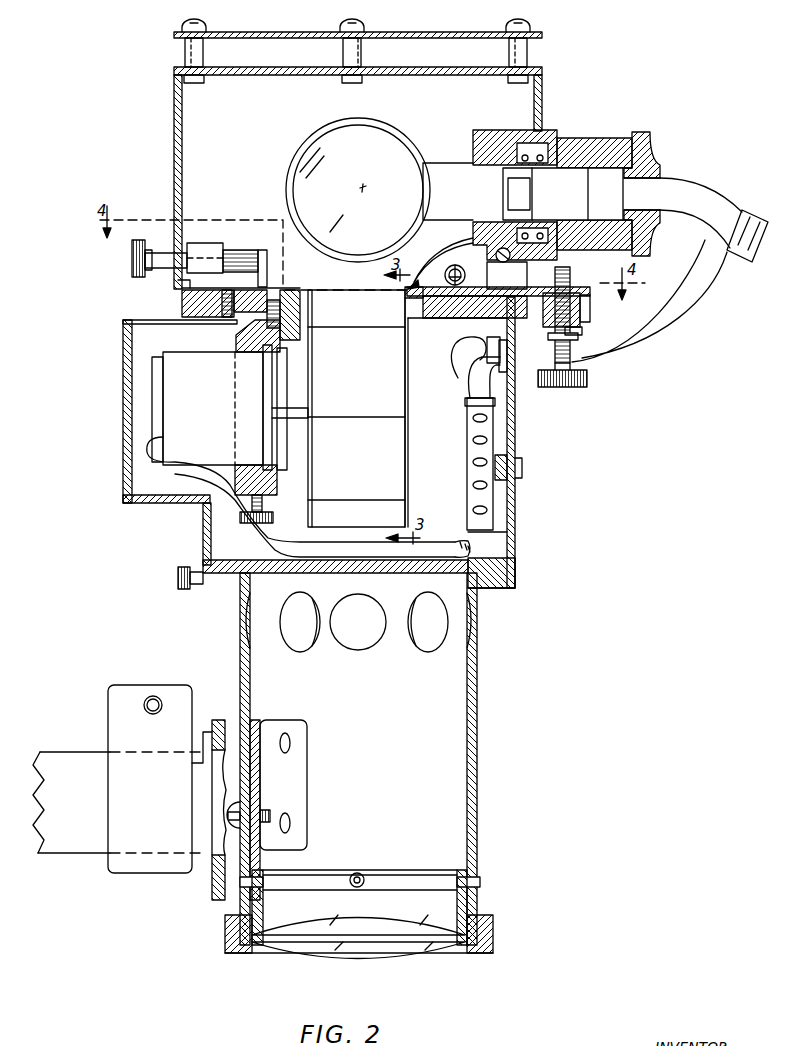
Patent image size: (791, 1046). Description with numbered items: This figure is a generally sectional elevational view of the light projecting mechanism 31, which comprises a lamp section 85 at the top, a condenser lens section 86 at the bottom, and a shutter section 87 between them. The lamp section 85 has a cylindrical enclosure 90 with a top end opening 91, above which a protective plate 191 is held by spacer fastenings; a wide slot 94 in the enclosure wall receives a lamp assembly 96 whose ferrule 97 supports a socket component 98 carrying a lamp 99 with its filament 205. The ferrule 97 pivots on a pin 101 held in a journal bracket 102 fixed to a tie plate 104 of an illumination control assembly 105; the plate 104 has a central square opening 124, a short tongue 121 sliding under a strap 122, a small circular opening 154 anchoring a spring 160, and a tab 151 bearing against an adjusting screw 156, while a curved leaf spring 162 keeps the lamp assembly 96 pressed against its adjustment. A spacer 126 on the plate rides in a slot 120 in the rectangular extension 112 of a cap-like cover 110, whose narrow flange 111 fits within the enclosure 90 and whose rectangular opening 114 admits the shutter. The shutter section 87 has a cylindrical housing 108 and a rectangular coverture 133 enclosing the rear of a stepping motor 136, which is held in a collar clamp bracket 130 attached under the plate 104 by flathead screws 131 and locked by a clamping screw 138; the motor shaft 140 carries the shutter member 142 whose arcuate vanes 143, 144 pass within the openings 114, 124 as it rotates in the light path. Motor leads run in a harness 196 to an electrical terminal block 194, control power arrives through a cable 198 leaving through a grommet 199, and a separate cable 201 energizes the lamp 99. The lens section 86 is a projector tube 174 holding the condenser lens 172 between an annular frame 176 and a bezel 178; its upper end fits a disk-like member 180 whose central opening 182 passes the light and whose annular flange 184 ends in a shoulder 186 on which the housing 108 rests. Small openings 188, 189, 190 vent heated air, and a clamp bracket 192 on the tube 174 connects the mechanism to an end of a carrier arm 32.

The projecting mechanism 31 is at (150, 66).
The mounting flange 32 is at (67, 850).
The lamp section 85 is at (284, 107).
The condenser lens section 86 is at (354, 751).
The shutter section 87 is at (429, 481).
The cylindrical enclosure 90 is at (176, 152).
The end opening 91 is at (311, 68).
The slot 94 is at (537, 131).
The lamp assembly 96 is at (552, 139).
The ferrule 97 is at (488, 133).
The socket component 98 is at (643, 154).
The lamp 99 is at (396, 152).
The pin 101 is at (501, 249).
The journal bracket 102 is at (527, 284).
The tie plate 104 is at (296, 288).
The illumination control assembly 105 is at (294, 164).
The cylindrical housing 108 is at (517, 543).
The cover element 110 is at (470, 312).
The flange 111 is at (200, 308).
The rectangular extension 112 is at (591, 311).
The rectangular opening 114 is at (413, 320).
The slot 120 is at (548, 316).
The tongue 121 is at (250, 308).
The strap 122 is at (183, 281).
The square opening 124 is at (579, 292).
The spacer 126 is at (584, 335).
The collar clamp bracket 130 is at (252, 342).
The flathead screws 131 is at (285, 339).
The coverture 133 is at (124, 458).
The stepping motor 136 is at (222, 409).
The clamping screw 138 is at (262, 521).
The shaft 140 is at (304, 416).
The shutter member 142 is at (368, 510).
The arcuate vane 143 is at (385, 406).
The arcuate vane 144 is at (372, 295).
The tab 151 is at (262, 250).
The circular opening 154 is at (208, 243).
The screw 156 is at (132, 263).
The spring 160 is at (445, 274).
The curved leaf spring 162 is at (455, 251).
The condenser lens 172 is at (335, 947).
The projector tube 174 is at (478, 760).
The annular frame 176 is at (335, 878).
The retainer ring or bezel 178 is at (230, 941).
The disk-like member 180 is at (463, 562).
The central opening 182 is at (330, 568).
The annular flange 184 is at (492, 582).
The shoulder 186 is at (516, 587).
The small opening 188 is at (370, 637).
The small opening 189 is at (174, 503).
The small opening 190 is at (455, 368).
The protective plate 191 is at (414, 33).
The clamp bracket 192 is at (158, 868).
The electrical terminal block 194 is at (466, 432).
The harness 196 is at (378, 558).
The cable 198 is at (700, 251).
The grommet 199 is at (510, 372).
The cable 201 is at (715, 200).
The filament 205 is at (363, 190).